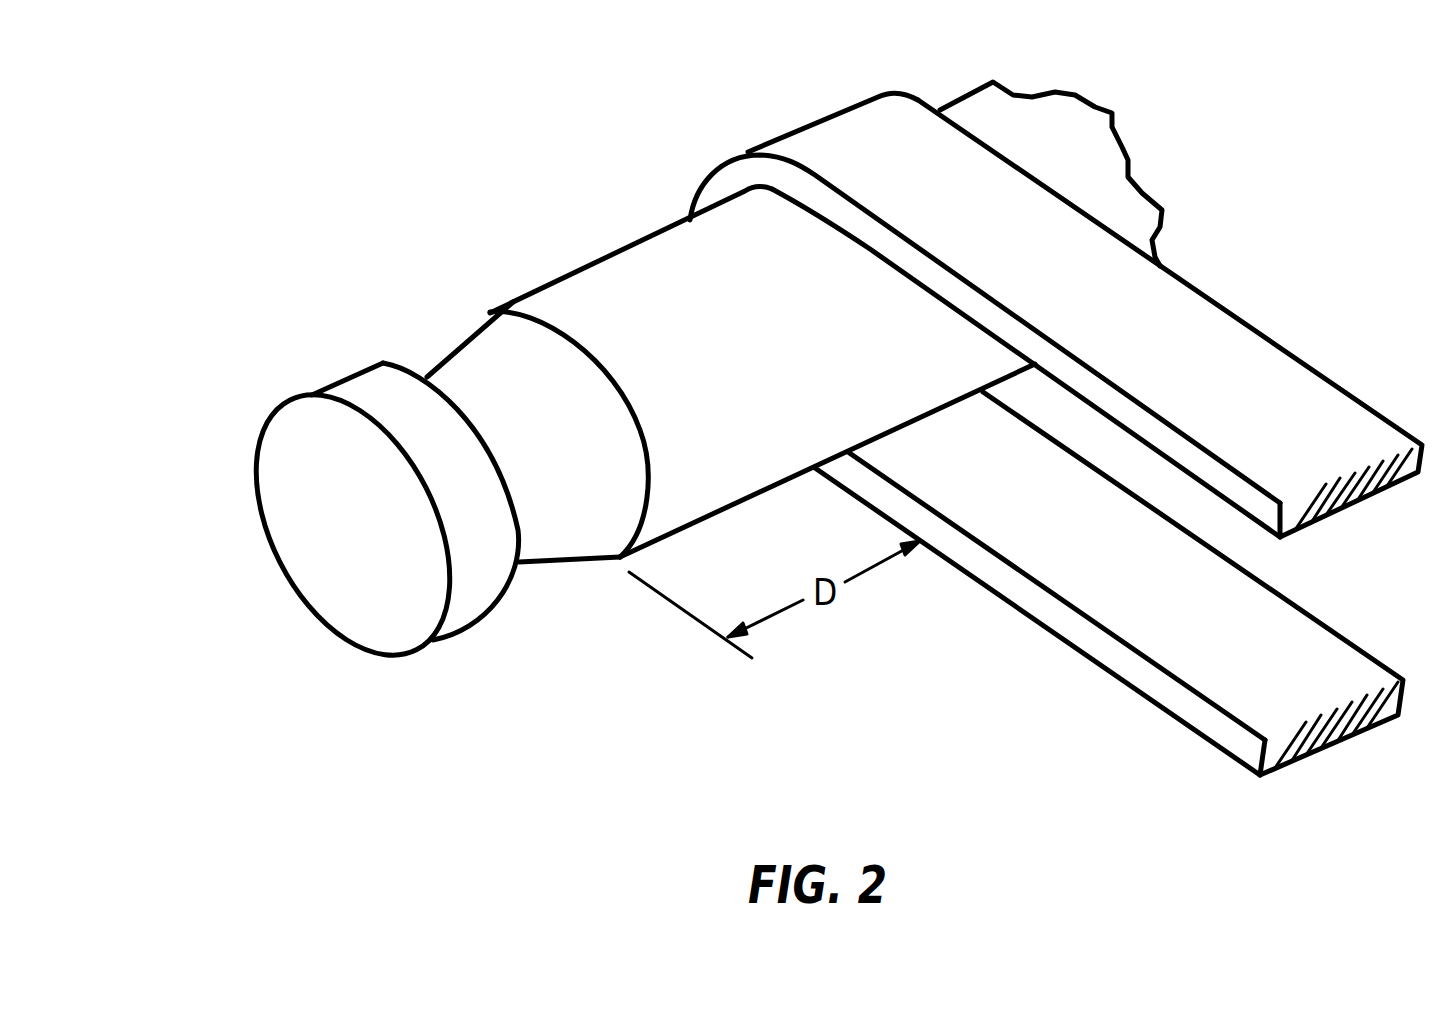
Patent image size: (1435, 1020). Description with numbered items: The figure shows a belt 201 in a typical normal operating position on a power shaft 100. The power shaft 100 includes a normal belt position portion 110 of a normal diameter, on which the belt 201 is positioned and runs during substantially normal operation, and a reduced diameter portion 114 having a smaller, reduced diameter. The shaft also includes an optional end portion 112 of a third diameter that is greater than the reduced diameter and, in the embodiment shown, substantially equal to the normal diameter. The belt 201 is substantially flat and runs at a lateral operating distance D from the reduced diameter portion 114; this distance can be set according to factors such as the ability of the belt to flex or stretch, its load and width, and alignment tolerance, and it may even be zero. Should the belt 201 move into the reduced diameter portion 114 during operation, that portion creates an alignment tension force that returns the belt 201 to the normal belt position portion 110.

The power shaft 100 is at (187, 772).
The normal belt position portion 110 is at (930, 34).
The end portion 112 is at (318, 312).
The reduced diameter portion 114 is at (463, 245).
The belt 201 is at (1290, 352).